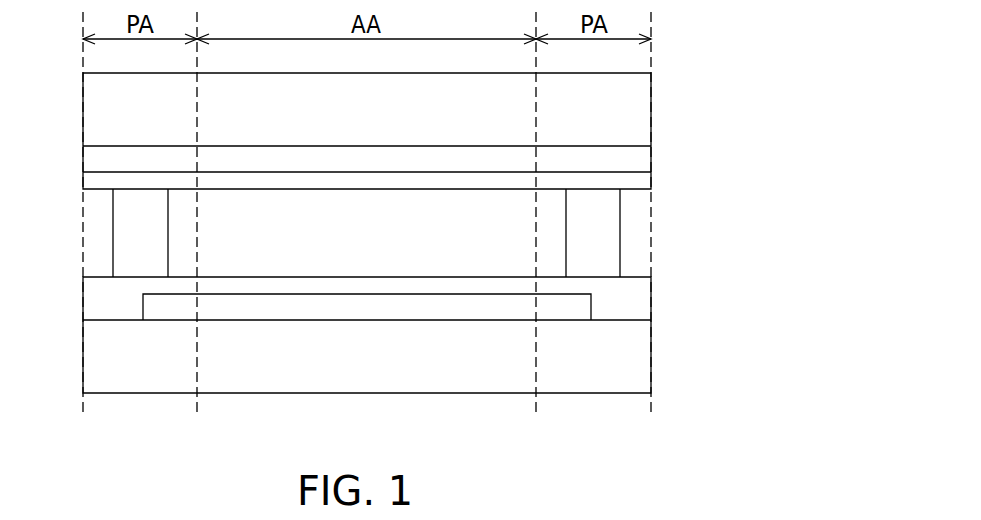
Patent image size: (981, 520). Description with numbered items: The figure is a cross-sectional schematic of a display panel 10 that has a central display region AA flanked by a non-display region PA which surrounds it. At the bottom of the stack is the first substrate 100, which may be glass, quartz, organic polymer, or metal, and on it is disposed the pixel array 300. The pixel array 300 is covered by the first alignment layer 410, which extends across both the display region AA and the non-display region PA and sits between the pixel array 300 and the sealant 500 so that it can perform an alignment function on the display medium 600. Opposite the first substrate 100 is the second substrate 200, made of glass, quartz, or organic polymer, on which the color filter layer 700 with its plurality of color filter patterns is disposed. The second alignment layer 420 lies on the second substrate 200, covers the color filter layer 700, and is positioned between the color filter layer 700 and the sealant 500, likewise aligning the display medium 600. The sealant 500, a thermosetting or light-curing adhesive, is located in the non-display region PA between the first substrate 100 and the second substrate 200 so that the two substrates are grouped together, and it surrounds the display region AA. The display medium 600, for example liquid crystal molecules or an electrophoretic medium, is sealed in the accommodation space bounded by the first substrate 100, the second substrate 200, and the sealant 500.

The display panel 10 is at (733, 437).
The first substrate 100 is at (638, 355).
The second substrate 200 is at (638, 112).
The pixel array 300 is at (580, 304).
The first alignment layer 410 is at (638, 294).
The second alignment layer 420 is at (638, 179).
The sealant 500 is at (608, 223).
The display medium 600 is at (178, 243).
The color filter layer 700 is at (638, 158).